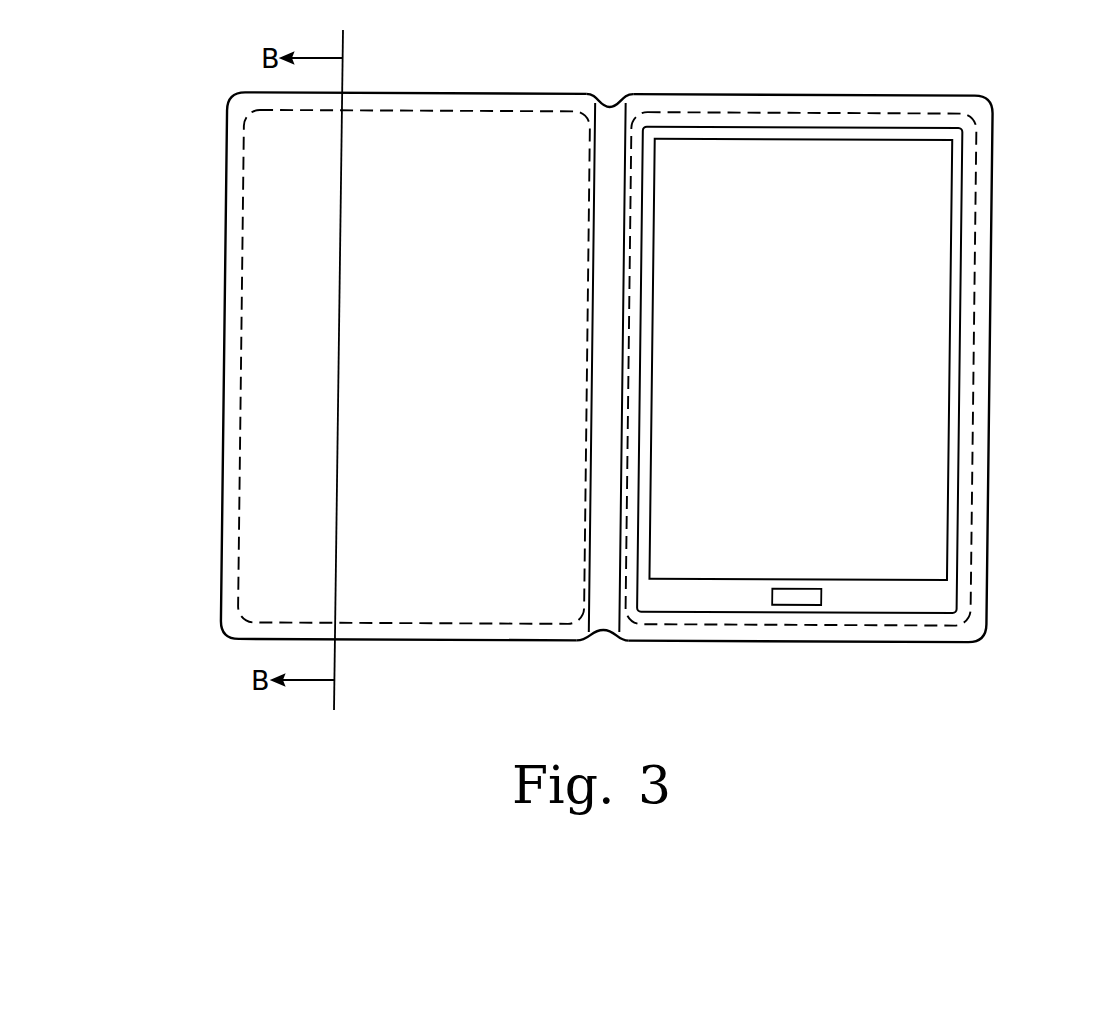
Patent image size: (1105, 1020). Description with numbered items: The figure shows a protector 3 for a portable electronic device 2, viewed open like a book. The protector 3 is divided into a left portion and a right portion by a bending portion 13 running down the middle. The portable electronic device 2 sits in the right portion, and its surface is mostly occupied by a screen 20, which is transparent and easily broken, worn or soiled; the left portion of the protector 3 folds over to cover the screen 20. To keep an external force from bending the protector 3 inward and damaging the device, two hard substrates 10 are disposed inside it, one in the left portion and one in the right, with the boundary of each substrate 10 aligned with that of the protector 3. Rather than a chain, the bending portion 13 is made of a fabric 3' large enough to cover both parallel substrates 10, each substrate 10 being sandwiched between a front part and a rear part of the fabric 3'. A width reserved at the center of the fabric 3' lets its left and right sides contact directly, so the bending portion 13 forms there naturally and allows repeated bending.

The portable electronic device 2 is at (923, 598).
The screen 20 is at (815, 347).
The protector 3 is at (607, 394).
The fabric 3' is at (414, 330).
The substrate 10 is at (973, 312).
The bending portion 13 is at (611, 132).